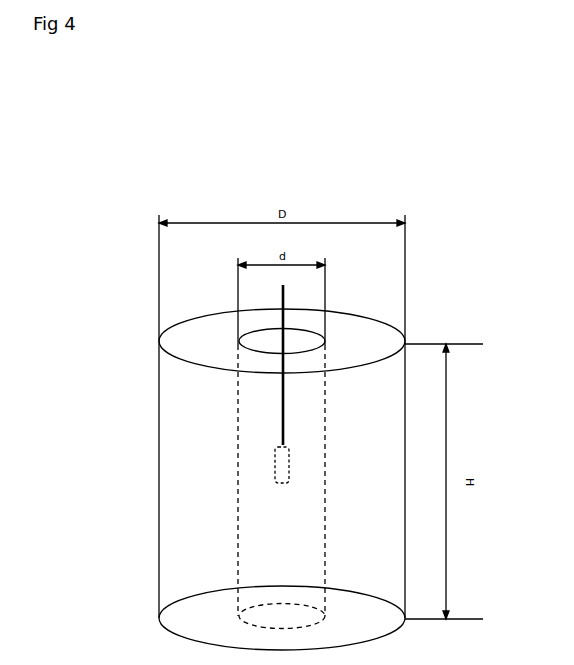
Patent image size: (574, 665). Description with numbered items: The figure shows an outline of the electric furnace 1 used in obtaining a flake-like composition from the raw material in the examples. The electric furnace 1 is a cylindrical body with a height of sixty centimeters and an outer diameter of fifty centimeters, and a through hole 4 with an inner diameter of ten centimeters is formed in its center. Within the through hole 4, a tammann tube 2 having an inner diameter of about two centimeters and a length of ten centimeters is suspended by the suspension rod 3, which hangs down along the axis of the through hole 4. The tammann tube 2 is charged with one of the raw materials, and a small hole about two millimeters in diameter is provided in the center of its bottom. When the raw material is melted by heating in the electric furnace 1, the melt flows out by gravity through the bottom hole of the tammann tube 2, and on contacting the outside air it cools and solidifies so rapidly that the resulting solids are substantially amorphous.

The electric furnace 1 is at (368, 331).
The tammann tube 2 is at (292, 466).
The suspension rod 3 is at (286, 296).
The through hole 4 is at (327, 447).